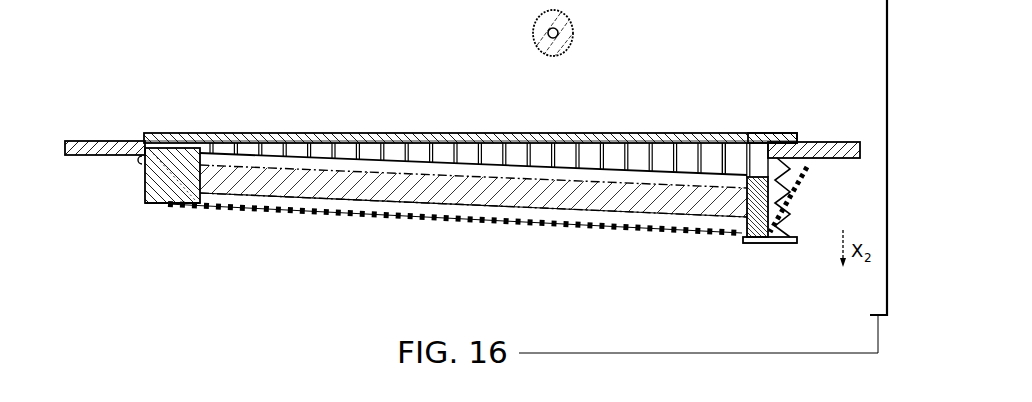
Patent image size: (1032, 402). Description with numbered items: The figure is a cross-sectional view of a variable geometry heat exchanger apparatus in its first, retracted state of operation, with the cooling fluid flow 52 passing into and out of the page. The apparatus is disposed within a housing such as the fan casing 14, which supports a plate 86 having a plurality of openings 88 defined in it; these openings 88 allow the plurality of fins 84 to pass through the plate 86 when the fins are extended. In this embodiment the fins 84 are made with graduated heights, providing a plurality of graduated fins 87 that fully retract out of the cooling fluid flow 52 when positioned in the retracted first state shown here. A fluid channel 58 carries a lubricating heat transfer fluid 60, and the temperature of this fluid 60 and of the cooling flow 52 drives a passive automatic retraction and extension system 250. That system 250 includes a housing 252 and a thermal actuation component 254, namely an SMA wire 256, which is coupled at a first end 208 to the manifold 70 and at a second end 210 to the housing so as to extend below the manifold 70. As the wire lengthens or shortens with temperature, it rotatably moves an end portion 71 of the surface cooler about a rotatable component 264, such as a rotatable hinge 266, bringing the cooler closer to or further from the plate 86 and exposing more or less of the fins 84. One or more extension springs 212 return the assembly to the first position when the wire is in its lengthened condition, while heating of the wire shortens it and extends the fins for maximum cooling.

The fan casing 14 is at (85, 140).
The cooling fluid flow 52 is at (576, 33).
The fluid channel 58 is at (367, 196).
The heat transfer fluid 60 is at (473, 191).
The manifold 70 is at (167, 204).
The end portion 71 is at (251, 231).
The fins 84 is at (723, 160).
The plate 86 is at (775, 133).
The graduated fins 87 is at (474, 152).
The openings 88 is at (210, 133).
The first end 208 is at (181, 206).
The second end 210 is at (815, 170).
The extension springs 212 is at (800, 163).
The passive automatic retraction and extension system 250 is at (797, 244).
The housing 252 is at (752, 244).
The thermal actuation component 254 is at (455, 247).
The SMA wire 256 is at (603, 230).
The rotatable component 264 is at (113, 218).
The rotatable hinge 266 is at (140, 165).